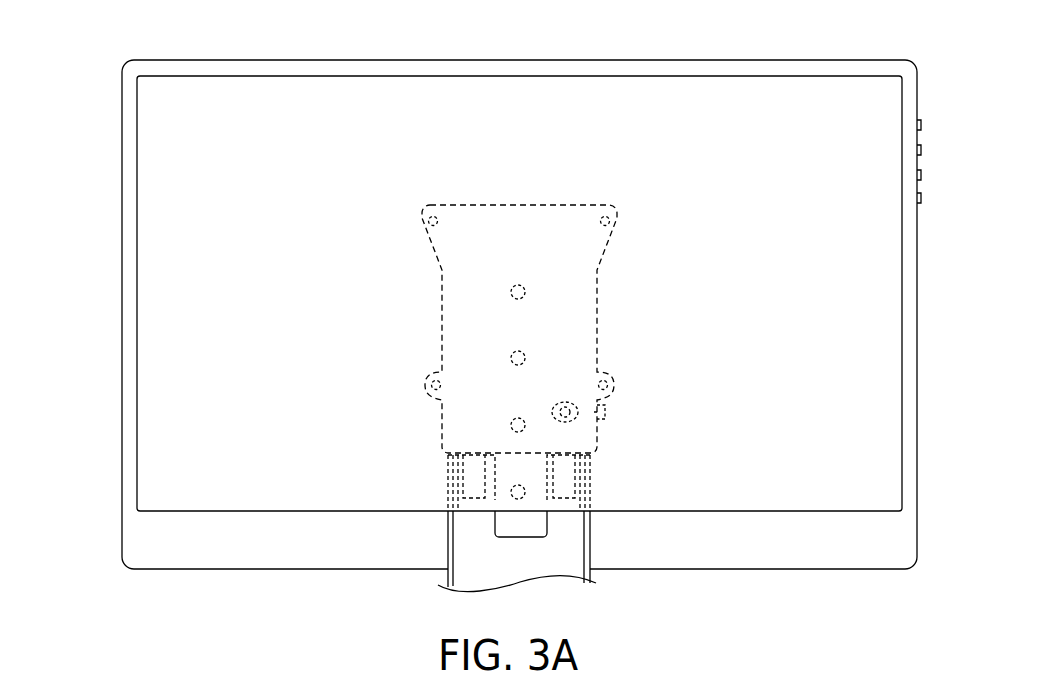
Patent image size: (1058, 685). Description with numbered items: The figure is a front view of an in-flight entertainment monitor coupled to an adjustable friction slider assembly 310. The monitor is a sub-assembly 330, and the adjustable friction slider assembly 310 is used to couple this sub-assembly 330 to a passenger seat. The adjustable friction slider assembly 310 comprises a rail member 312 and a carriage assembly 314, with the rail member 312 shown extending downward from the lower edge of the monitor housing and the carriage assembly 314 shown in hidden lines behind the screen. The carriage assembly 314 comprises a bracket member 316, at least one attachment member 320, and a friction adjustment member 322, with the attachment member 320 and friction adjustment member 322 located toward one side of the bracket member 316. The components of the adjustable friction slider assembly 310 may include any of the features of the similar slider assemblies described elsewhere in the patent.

The adjustable friction slider assembly 310 is at (642, 287).
The rail member 312 is at (472, 553).
The carriage assembly 314 is at (435, 194).
The bracket member 316 is at (552, 225).
The attachment member 320 is at (576, 410).
The friction adjustment member 322 is at (607, 415).
The sub-assembly 330 is at (130, 108).